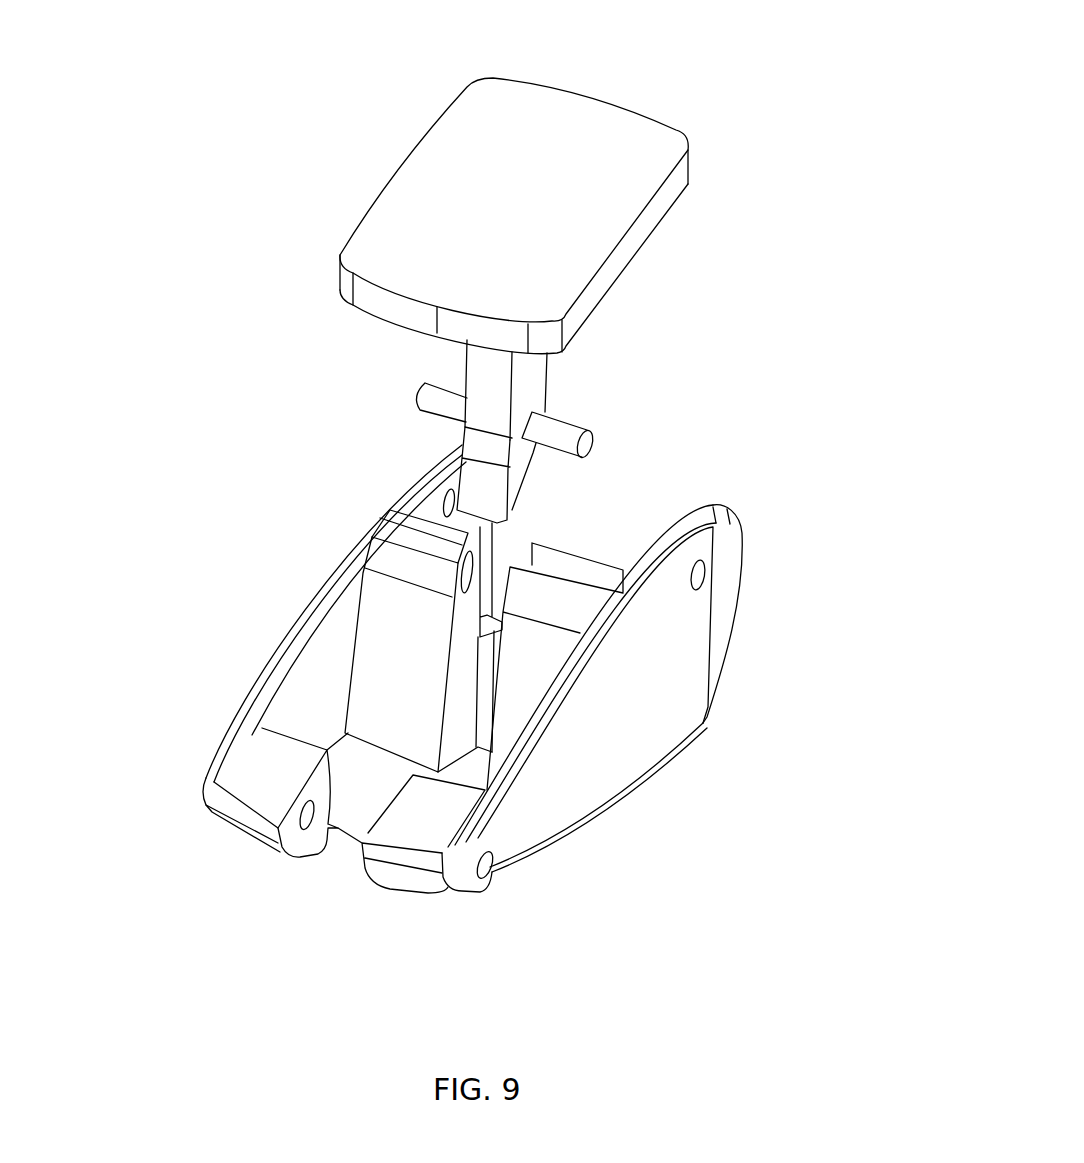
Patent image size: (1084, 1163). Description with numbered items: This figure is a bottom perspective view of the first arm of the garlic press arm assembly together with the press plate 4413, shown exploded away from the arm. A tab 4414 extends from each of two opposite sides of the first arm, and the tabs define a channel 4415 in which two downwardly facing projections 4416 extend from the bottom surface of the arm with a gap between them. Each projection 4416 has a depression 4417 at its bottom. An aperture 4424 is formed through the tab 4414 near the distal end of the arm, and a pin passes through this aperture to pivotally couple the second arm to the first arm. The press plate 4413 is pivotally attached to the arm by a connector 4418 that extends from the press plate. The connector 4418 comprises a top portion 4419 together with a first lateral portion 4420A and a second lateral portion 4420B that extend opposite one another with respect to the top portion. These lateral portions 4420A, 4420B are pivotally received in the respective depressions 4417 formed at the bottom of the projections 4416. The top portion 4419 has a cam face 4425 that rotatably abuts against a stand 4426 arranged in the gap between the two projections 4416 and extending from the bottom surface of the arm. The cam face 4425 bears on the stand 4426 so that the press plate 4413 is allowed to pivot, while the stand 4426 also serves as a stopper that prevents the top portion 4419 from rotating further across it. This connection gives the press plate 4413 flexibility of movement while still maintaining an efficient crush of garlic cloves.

The press plate 4413 is at (568, 157).
The connector 4418 is at (573, 368).
The top portion 4419 is at (482, 487).
The first lateral portion 4420A is at (560, 435).
The second lateral portion 4420B is at (443, 401).
The cam face 4425 is at (553, 515).
The channel 4415 is at (490, 719).
The depression 4417 is at (385, 517).
The tab 4414 is at (298, 702).
The aperture 4424 is at (702, 578).
The projection 4416 is at (395, 652).
The stand 4426 is at (487, 687).